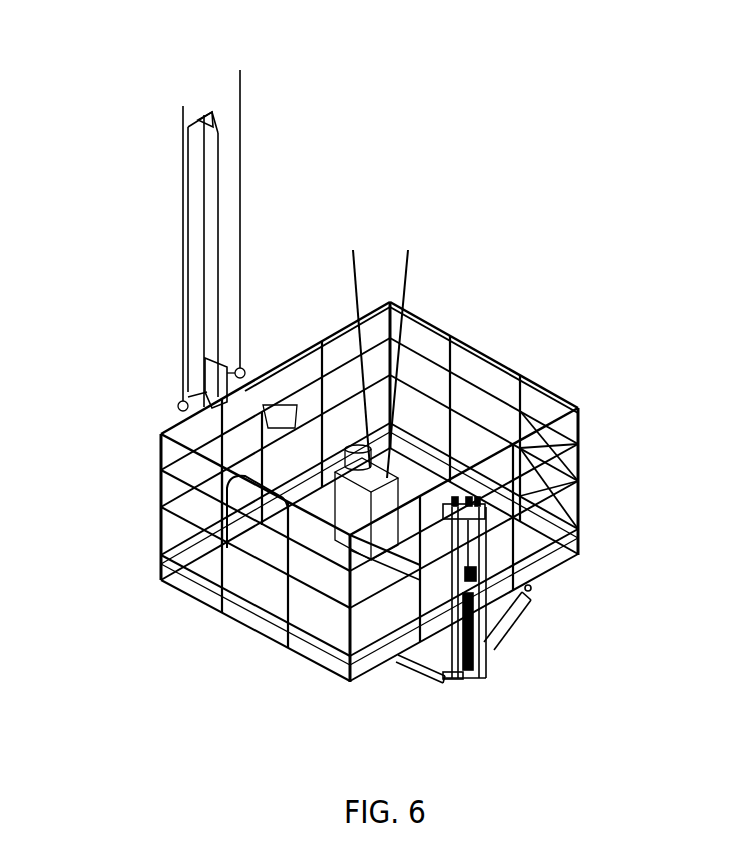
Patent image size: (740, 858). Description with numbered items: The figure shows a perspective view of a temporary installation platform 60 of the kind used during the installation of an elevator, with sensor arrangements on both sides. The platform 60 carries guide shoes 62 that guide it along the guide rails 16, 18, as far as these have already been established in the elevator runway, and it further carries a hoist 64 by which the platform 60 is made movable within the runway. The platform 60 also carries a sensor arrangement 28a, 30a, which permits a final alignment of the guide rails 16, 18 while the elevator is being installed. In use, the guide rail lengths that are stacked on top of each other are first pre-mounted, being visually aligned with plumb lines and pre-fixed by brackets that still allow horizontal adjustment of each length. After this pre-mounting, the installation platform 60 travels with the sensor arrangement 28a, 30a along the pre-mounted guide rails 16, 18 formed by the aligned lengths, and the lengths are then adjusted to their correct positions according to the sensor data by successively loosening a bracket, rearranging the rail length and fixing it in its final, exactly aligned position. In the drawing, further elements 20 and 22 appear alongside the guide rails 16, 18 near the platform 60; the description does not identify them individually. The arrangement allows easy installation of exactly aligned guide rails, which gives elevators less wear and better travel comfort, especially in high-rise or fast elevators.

The guide rail 16 is at (187, 218).
The guide rail 18 is at (200, 106).
The guide column 20 is at (180, 186).
The hoist cable 22 is at (244, 154).
The sensor arrangement 28a is at (136, 381).
The sensor arrangement 30a is at (193, 373).
The temporary installation platform 60 is at (479, 262).
The guide shoe 62 is at (527, 497).
The hoist 64 is at (359, 258).